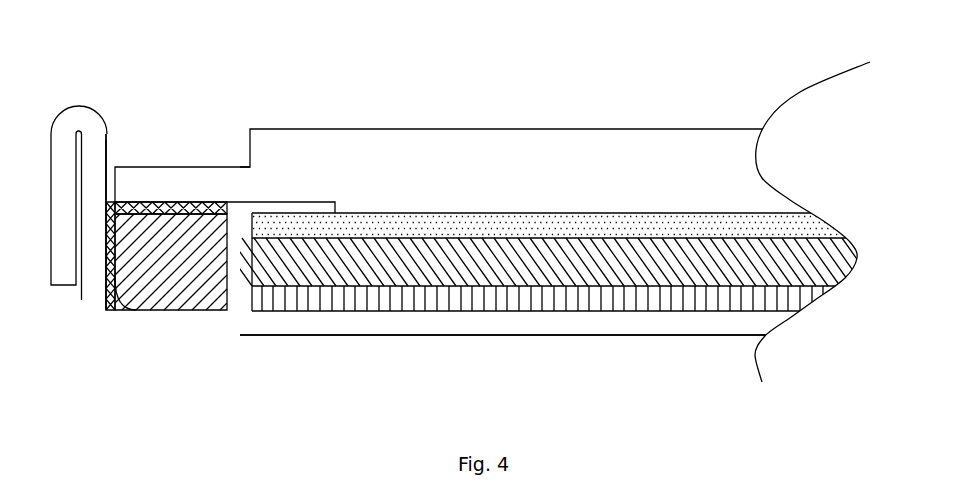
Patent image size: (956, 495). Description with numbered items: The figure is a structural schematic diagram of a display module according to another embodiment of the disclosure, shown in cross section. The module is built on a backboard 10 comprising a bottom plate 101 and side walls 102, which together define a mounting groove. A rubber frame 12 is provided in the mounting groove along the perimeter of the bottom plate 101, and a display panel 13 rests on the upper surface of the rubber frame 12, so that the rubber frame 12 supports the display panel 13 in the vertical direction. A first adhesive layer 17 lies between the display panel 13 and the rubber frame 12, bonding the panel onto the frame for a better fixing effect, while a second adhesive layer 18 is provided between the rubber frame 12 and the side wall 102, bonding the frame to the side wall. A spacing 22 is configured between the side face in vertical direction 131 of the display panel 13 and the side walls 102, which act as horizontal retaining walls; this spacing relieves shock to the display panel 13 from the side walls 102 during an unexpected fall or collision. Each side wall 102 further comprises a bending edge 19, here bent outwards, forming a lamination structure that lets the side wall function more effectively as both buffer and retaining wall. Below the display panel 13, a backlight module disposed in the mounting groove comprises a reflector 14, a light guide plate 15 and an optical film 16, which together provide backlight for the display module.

The backboard 10 is at (93, 318).
The bottom plate 101 is at (640, 323).
The side wall 102 is at (95, 187).
The rubber frame 12 is at (167, 305).
The display panel 13 is at (347, 147).
The side face in vertical direction of display panel 131 is at (119, 188).
The reflector 14 is at (452, 297).
The light guide plate 15 is at (463, 273).
The optical film 16 is at (632, 225).
The first adhesive layer 17 is at (167, 202).
The second adhesive layer 18 is at (111, 310).
The bending edge 19 is at (60, 162).
The spacing 22 is at (111, 188).